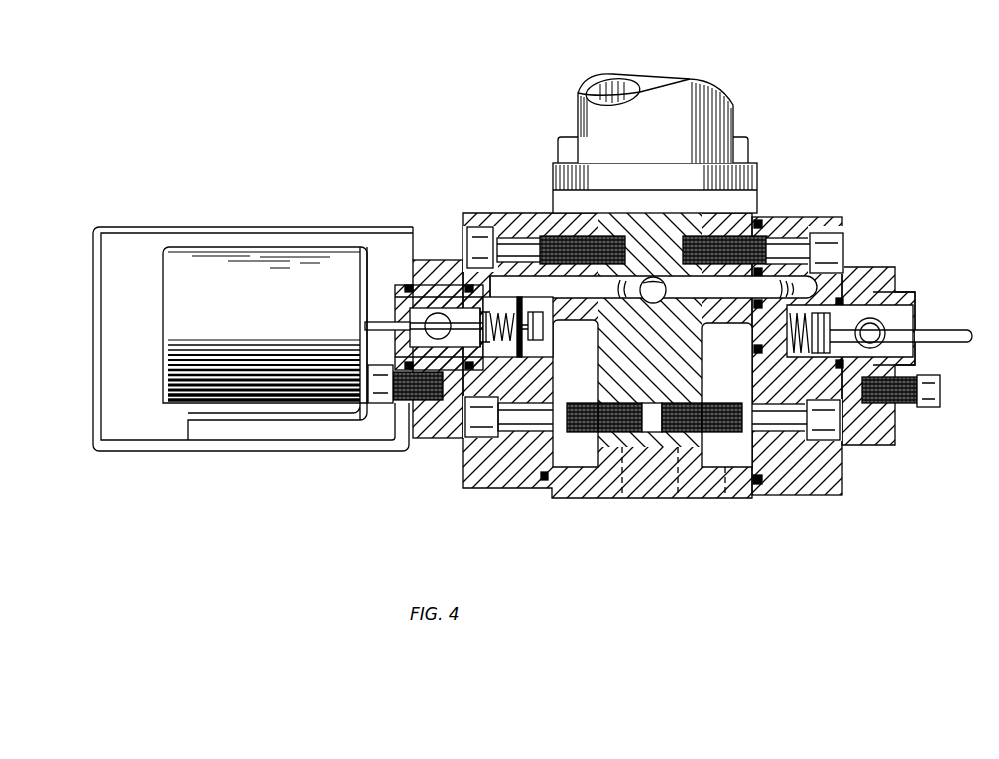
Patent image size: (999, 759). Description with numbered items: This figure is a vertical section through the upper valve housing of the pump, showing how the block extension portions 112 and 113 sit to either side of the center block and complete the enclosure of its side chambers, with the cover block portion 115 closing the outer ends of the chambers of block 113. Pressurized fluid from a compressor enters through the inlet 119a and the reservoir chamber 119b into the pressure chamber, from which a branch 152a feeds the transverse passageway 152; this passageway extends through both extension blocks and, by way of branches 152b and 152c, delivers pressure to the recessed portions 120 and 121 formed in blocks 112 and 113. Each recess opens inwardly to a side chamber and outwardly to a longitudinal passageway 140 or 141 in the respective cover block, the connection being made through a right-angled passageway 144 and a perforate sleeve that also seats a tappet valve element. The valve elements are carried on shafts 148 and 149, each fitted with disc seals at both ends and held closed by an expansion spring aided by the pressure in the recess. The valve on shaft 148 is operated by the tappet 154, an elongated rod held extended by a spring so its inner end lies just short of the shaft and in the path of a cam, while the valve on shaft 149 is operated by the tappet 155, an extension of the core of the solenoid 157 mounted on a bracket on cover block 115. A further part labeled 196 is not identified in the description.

The block extension portion 112 is at (813, 488).
The block extension portion 113 is at (510, 482).
The cover block portion 115 is at (450, 442).
The inlet 119a is at (627, 93).
The reservoir chamber 119b is at (603, 125).
The recessed portion 120 is at (448, 432).
The recessed portion 121 is at (844, 350).
The passageway 140 is at (900, 291).
The passageway 141 is at (423, 300).
The passageway 144 is at (890, 430).
The shaft 148 is at (903, 337).
The shaft 149 is at (457, 318).
The passageway 152 is at (712, 293).
The branch 152a is at (722, 217).
The branch 152b is at (492, 277).
The branch 152c is at (800, 313).
The tappet 154 is at (938, 333).
The tappet 155 is at (382, 326).
The solenoid 157 is at (220, 262).
The piston 196 is at (533, 338).